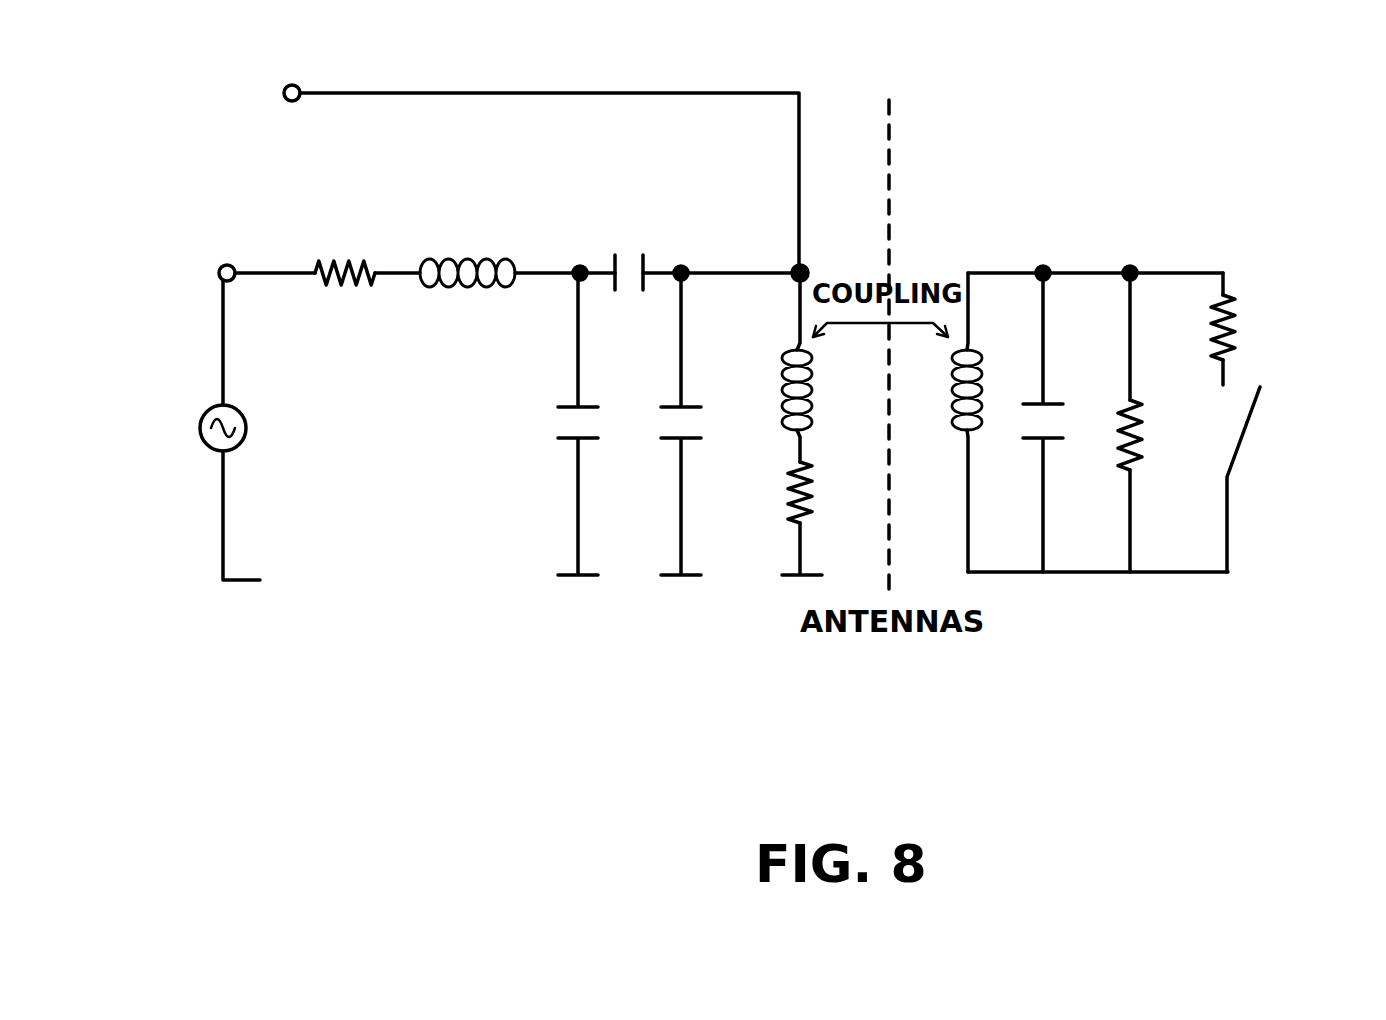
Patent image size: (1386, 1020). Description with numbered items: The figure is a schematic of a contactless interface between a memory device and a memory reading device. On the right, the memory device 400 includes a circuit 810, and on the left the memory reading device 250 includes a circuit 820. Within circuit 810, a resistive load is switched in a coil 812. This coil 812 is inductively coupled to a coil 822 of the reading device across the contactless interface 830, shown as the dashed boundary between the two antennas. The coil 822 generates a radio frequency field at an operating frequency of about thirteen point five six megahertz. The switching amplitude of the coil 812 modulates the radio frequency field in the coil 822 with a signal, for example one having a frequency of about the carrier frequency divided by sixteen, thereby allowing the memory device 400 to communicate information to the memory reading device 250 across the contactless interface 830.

The memory reading device 250 is at (817, 718).
The memory device 400 is at (1283, 713).
The circuit 820 is at (520, 93).
The coil 822 is at (783, 383).
The contactless interface 830 is at (889, 168).
The coil 812 is at (978, 383).
The circuit 810 is at (1068, 273).